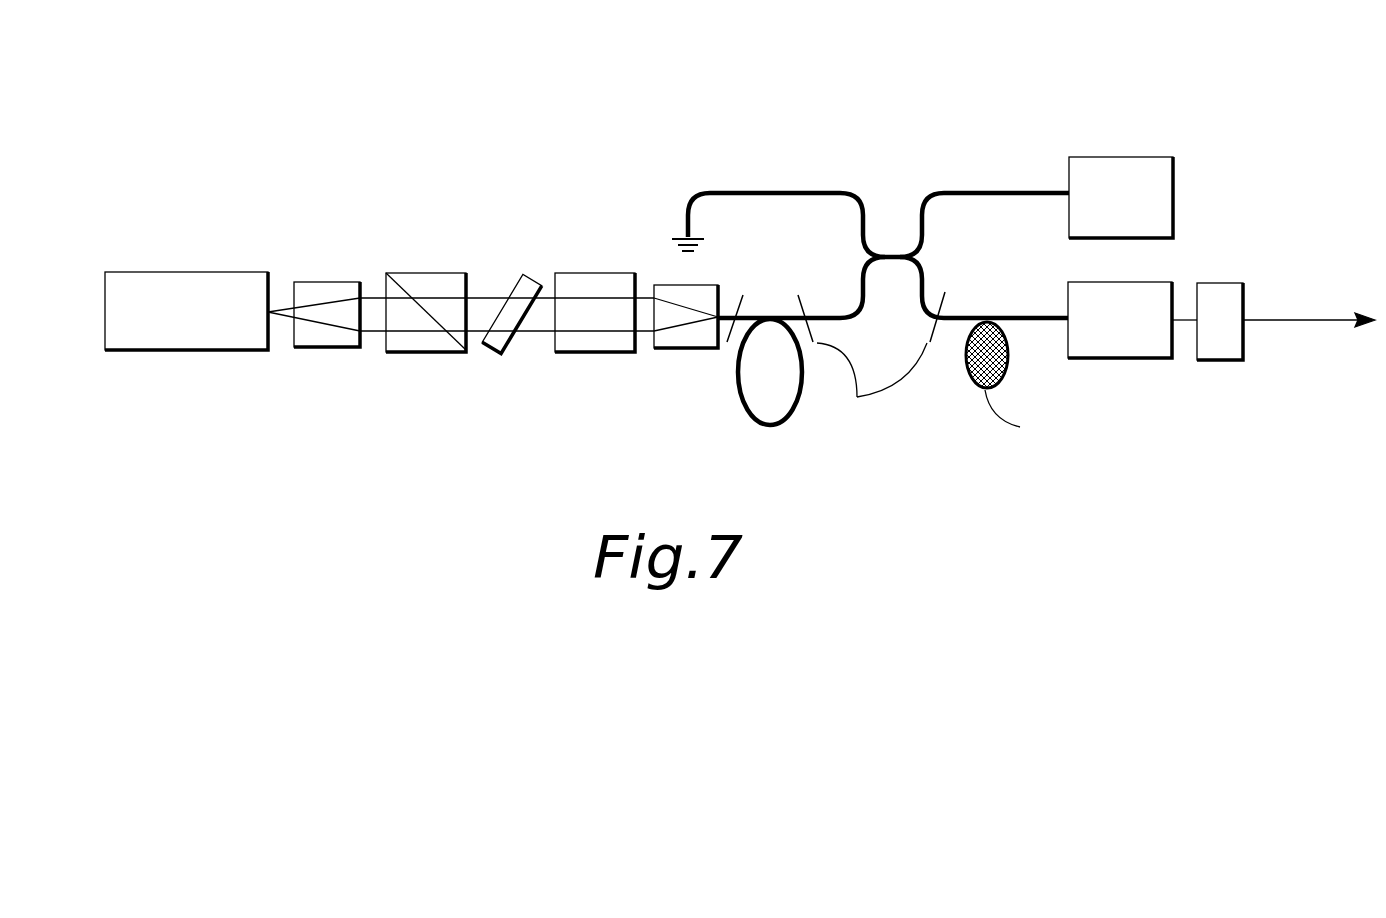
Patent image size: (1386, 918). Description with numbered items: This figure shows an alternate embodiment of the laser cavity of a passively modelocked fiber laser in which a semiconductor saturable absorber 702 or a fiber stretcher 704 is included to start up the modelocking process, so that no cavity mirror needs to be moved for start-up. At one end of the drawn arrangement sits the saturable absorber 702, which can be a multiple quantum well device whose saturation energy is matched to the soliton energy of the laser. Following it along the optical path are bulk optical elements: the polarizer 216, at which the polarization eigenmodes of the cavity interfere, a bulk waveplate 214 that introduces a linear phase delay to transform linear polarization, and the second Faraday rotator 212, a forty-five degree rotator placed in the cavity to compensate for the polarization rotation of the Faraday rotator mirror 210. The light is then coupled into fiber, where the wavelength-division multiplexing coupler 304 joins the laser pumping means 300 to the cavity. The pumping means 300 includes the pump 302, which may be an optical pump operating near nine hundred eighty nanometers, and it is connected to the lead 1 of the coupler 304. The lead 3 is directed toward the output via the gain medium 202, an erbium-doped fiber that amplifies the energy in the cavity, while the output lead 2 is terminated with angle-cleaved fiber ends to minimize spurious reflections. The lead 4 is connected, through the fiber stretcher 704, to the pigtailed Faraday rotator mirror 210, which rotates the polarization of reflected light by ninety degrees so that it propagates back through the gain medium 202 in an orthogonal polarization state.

The laser pumping means 300 is at (1018, 140).
The saturable absorber 702 is at (170, 272).
The polarizer 216 is at (415, 355).
The bulk waveplate 214 is at (500, 356).
The second Faraday rotator 212 is at (613, 355).
The wavelength-division multiplexing coupler 304 is at (870, 216).
The pump 302 is at (1128, 157).
The gain medium 202 is at (772, 427).
The fiber stretcher 704 is at (1005, 378).
The Faraday rotator mirror 210 is at (1123, 360).
The lead 1 is at (984, 206).
The output lead 2 is at (778, 206).
The lead 3 is at (801, 287).
The lead 4 is at (984, 287).